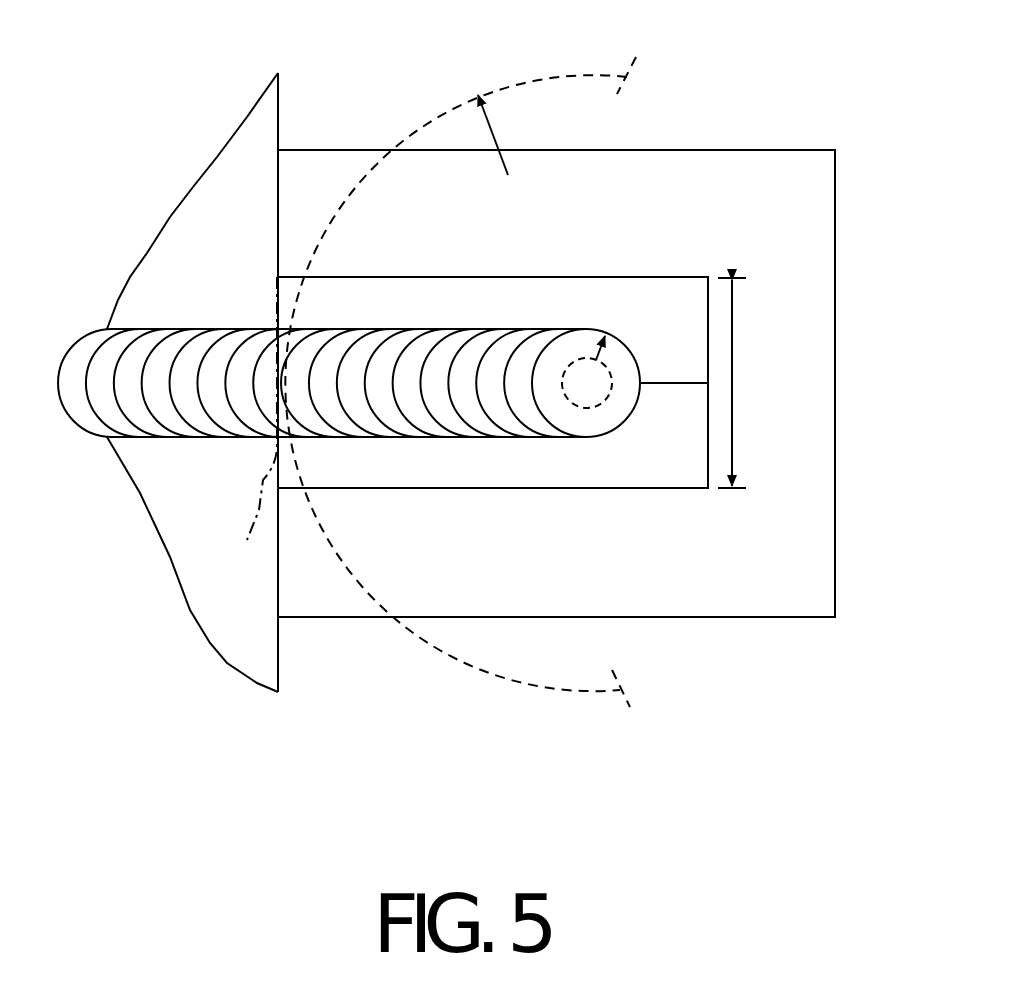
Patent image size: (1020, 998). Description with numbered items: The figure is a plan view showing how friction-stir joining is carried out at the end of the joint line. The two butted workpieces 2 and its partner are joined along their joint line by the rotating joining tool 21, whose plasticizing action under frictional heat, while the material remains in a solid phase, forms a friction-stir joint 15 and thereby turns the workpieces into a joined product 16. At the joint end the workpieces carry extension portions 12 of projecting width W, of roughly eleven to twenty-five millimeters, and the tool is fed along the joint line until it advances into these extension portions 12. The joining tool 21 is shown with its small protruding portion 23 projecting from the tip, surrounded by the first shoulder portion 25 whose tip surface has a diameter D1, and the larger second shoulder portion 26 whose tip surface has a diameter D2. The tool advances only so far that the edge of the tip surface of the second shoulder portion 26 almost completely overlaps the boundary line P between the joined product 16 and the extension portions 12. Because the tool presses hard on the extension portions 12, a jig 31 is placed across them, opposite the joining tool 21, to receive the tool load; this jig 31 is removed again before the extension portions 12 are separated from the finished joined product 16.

The joined product 16 is at (296, 106).
The jig 31 is at (728, 617).
The extension portions 12 is at (645, 488).
The friction-stir joint 15 is at (163, 437).
The first shoulder portion 25 is at (623, 343).
The protruding portion 23 is at (595, 405).
The second shoulder portion 26 is at (513, 78).
The joining tool 21 is at (433, 661).
The workpiece 2 is at (277, 650).
The boundary line P is at (256, 430).
The diameter of the tip surface of the first shoulder portion D1 is at (597, 357).
The diameter of the tip surface of the second shoulder portion D2 is at (512, 163).
The projecting width W is at (733, 383).